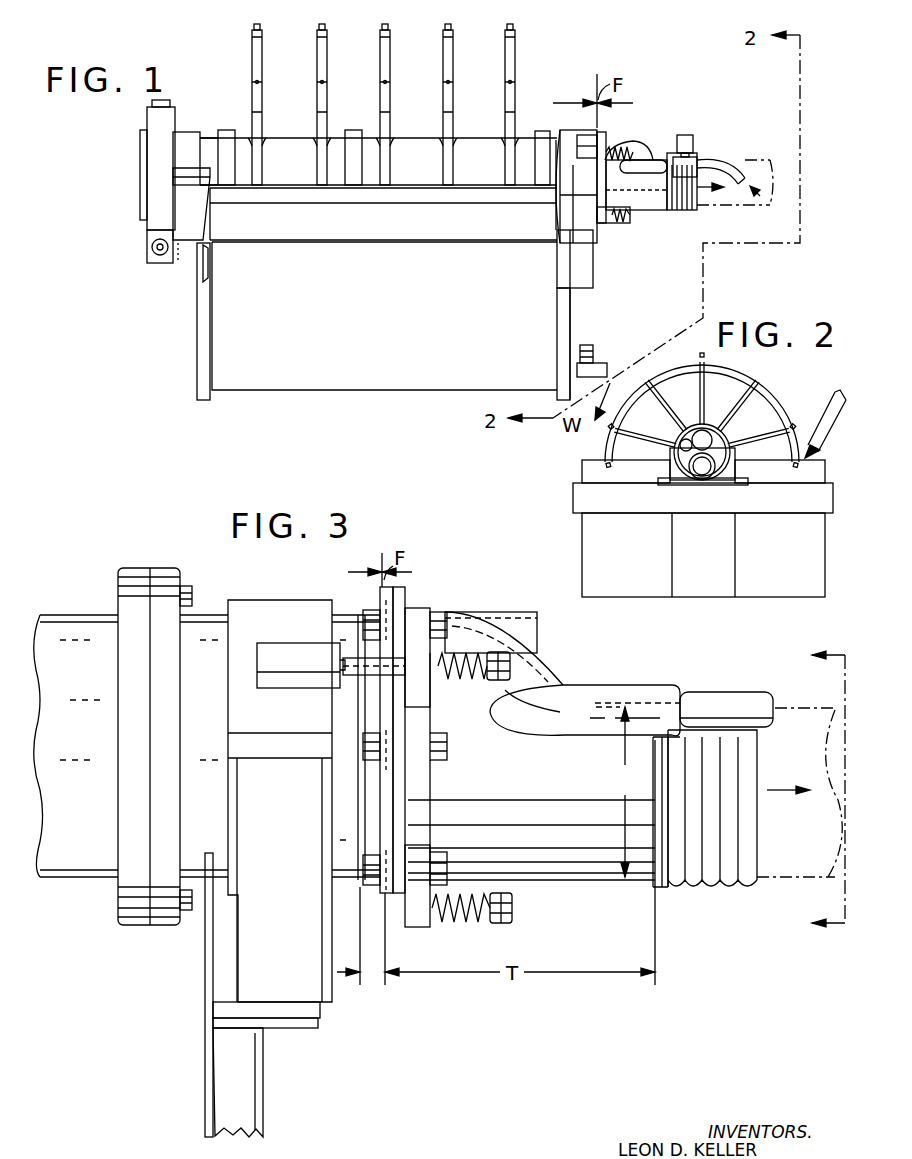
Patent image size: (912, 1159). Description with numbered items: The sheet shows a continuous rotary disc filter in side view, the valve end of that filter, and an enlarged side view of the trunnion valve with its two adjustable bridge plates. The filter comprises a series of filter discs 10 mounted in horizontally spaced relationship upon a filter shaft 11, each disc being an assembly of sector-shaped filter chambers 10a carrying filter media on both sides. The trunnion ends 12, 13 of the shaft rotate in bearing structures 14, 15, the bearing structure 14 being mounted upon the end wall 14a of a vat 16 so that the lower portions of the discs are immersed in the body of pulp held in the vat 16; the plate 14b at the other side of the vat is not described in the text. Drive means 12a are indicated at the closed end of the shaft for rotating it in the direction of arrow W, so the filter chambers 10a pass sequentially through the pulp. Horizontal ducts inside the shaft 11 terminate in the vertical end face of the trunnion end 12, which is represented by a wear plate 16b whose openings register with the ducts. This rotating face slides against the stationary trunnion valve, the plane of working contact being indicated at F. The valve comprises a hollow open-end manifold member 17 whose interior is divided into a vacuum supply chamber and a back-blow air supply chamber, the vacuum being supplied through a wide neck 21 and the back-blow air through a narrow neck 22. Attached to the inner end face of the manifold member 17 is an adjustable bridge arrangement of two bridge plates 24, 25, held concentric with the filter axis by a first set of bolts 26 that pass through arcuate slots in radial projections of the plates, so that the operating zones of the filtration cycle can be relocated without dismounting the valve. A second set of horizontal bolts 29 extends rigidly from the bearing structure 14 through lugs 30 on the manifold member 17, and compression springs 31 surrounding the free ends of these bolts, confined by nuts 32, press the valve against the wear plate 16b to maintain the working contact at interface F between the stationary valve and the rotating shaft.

In FIG. 1, the filter discs 10 is at (316, 64).
In FIG. 2, the filter discs 10 is at (773, 388).
In FIG. 3, the filter discs 10 is at (481, 752).
In FIG. 2, the sector-shaped filter chambers 10a is at (700, 394).
In FIG. 1, the filter shaft 11 is at (280, 148).
In FIG. 3, the filter shaft 11 is at (60, 620).
In FIG. 1, the trunnion end 12 is at (558, 142).
In FIG. 3, the trunnion end 12 is at (205, 614).
In FIG. 1, the drive means 12a is at (147, 254).
In FIG. 1, the trunnion end 13 is at (208, 146).
In FIG. 1, the bearing structure 14 is at (572, 142).
In FIG. 3, the bearing structure 14 is at (284, 606).
In FIG. 1, the end wall 14a is at (572, 302).
In FIG. 3, the end wall 14a is at (263, 1115).
In FIG. 1, the housing end plate 14b is at (197, 300).
In FIG. 1, the bearing structure 15 is at (185, 132).
In FIG. 1, the vat 16 is at (395, 339).
In FIG. 2, the vat 16 is at (570, 544).
In FIG. 3, the wear plate 16b is at (372, 975).
In FIG. 1, the manifold member 17 is at (652, 194).
In FIG. 3, the manifold member 17 is at (532, 781).
In FIG. 3, the wide neck 21 is at (617, 792).
In FIG. 1, the narrow neck 22 is at (652, 158).
In FIG. 3, the narrow neck 22 is at (657, 684).
In FIG. 3, the bridge plate 24 is at (380, 598).
In FIG. 3, the bridge plate 25 is at (405, 596).
In FIG. 3, the bolts 26 is at (437, 738).
In FIG. 3, the horizontal bolts 29 is at (372, 668).
In FIG. 3, the lugs 30 is at (430, 690).
In FIG. 3, the compression springs 31 is at (462, 653).
In FIG. 3, the nuts 32 is at (500, 657).